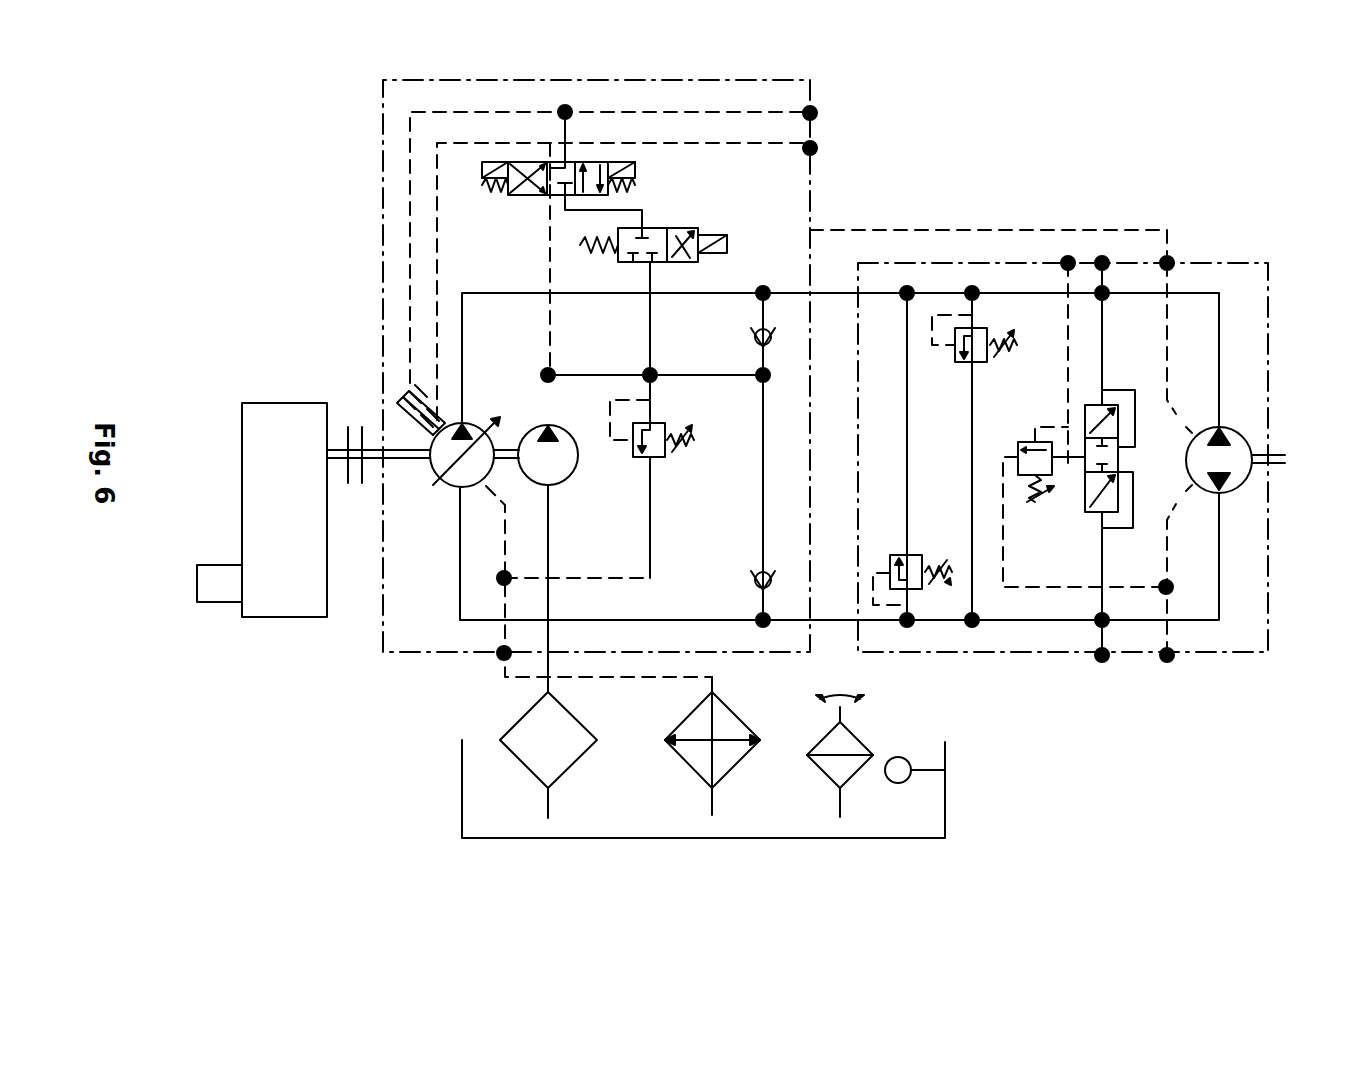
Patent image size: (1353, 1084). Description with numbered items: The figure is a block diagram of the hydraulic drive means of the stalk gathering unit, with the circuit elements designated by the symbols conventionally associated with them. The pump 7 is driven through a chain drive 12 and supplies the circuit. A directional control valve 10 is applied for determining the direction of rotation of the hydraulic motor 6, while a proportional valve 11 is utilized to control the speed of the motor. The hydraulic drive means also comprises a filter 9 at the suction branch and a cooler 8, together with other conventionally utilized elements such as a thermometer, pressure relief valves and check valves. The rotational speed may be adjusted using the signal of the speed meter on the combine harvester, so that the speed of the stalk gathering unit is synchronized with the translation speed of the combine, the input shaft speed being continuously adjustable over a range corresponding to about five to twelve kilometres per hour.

The hydraulic motor 6 is at (1200, 492).
The pump 7 is at (470, 463).
The cooler 8 is at (688, 763).
The filter 9 is at (522, 763).
The directional control valve 10 is at (482, 167).
The proportional valve 11 is at (628, 240).
The chain drive 12 is at (282, 573).